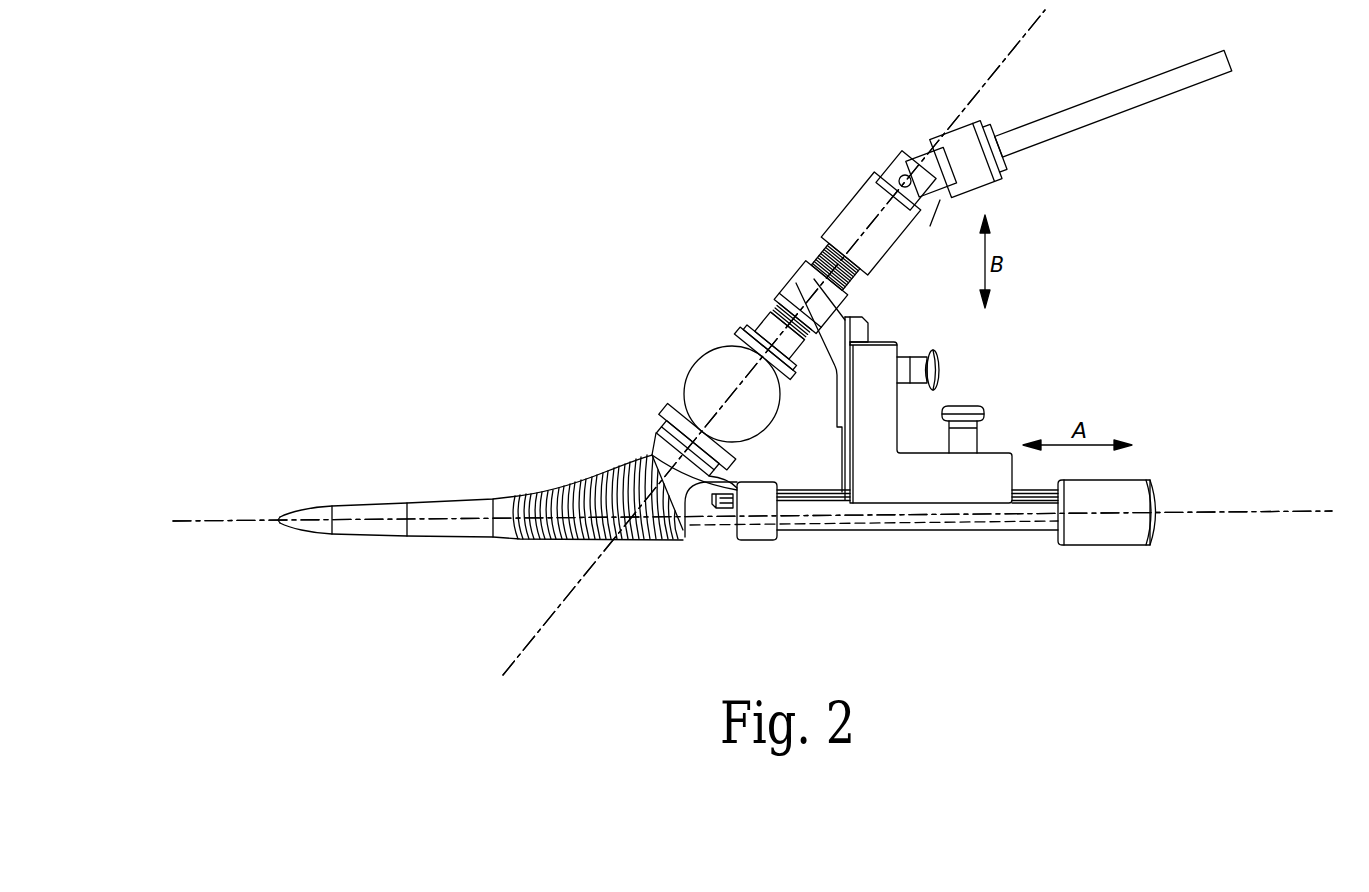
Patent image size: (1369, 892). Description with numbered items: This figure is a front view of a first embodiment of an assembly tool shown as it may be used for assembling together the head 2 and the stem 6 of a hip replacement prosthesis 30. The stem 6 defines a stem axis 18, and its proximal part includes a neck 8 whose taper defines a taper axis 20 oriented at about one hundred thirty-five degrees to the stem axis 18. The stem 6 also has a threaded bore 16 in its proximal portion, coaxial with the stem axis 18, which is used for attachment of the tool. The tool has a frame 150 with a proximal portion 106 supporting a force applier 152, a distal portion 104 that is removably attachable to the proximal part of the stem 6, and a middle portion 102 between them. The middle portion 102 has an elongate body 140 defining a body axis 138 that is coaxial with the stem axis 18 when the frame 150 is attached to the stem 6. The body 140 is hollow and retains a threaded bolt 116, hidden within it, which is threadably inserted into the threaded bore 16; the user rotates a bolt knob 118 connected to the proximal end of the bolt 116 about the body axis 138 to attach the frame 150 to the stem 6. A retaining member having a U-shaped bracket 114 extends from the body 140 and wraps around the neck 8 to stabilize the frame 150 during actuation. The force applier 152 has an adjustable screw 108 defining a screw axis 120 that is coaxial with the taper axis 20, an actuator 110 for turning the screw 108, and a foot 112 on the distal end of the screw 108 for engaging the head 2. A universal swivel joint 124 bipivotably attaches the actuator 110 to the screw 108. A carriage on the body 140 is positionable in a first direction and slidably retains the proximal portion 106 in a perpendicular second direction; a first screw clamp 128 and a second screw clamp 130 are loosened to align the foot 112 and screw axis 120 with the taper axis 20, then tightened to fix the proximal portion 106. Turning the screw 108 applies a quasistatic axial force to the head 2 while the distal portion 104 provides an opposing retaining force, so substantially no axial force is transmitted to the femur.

The head 2 is at (702, 366).
The stem 6 is at (493, 500).
The neck 8 is at (660, 455).
The threaded bore 16 is at (660, 541).
The stem axis 18 is at (220, 520).
The taper axis 20 is at (992, 70).
The hip replacement prosthesis 30 is at (364, 487).
The middle portion 102 is at (992, 540).
The distal portion 104 is at (746, 543).
The proximal portion 106 is at (778, 290).
The adjustable screw 108 is at (814, 263).
The actuator 110 is at (1092, 100).
The foot 112 is at (742, 336).
The bracket 114 is at (684, 422).
The threaded bolt 116 is at (914, 536).
The bolt knob 118 is at (1102, 546).
The screw axis 120 is at (580, 590).
The universal swivel joint 124 is at (905, 163).
The first screw clamp 128 is at (936, 358).
The second screw clamp 130 is at (963, 408).
The body axis 138 is at (1250, 511).
The elongate body 140 is at (843, 538).
The frame 150 is at (801, 540).
The force applier 152 is at (884, 263).